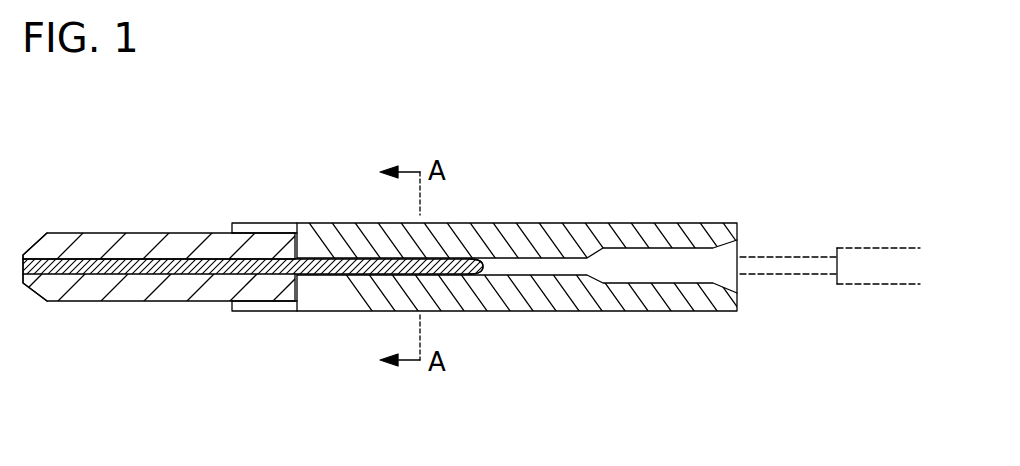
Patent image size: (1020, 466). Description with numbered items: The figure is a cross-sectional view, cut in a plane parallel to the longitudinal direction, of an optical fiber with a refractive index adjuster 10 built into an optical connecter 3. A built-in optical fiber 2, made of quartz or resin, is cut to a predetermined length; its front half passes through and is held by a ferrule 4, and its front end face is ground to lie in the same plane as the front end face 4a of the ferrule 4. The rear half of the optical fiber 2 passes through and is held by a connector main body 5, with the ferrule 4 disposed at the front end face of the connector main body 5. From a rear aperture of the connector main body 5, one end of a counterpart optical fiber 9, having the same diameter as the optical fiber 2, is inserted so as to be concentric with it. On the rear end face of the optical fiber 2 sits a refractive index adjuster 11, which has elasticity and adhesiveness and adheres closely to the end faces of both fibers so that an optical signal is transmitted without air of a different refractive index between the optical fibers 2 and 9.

The optical fiber 2 is at (203, 262).
The optical connecter 3 is at (316, 208).
The ferrule 4 is at (125, 240).
The front end face 4a is at (22, 253).
The connector main body 5 is at (363, 242).
The optical fiber 9 is at (817, 257).
The optical fiber with a refractive index adjuster 10 is at (160, 252).
The refractive index adjuster 11 is at (477, 260).